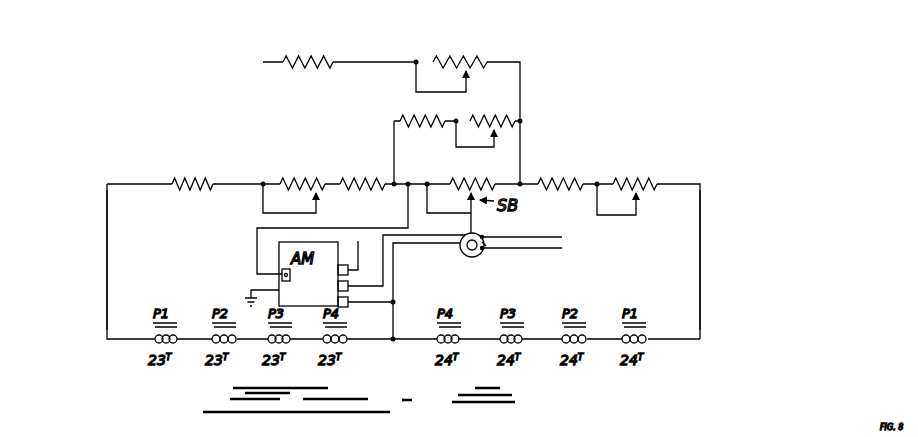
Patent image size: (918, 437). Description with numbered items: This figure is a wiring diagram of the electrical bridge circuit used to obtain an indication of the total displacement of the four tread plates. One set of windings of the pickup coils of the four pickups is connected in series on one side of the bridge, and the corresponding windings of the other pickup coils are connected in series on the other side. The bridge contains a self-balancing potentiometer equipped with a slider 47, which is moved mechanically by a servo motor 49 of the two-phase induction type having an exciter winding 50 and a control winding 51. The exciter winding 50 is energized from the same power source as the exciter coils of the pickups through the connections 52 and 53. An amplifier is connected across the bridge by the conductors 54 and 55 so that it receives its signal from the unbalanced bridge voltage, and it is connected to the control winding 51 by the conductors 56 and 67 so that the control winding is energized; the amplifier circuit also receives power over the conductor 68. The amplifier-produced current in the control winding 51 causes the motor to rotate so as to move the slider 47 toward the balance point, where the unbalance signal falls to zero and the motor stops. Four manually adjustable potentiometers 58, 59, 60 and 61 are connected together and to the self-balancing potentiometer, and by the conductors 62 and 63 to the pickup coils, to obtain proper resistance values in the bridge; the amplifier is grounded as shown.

The slider 47 is at (468, 195).
The servo motor 49 is at (487, 243).
The exciter winding 50 is at (469, 256).
The control winding 51 is at (483, 238).
The connection 52 is at (538, 250).
The connection 53 is at (560, 237).
The conductor 54 is at (408, 204).
The conductor 55 is at (394, 318).
The conductor 56 is at (369, 286).
The manually adjustable potentiometer 58 is at (293, 177).
The manually adjustable potentiometer 59 is at (462, 62).
The manually adjustable potentiometer 60 is at (498, 120).
The manually adjustable potentiometer 61 is at (632, 182).
The conductor 62 is at (700, 238).
The conductor 63 is at (107, 249).
The conductor 67 is at (372, 303).
The conductor 68 is at (358, 241).